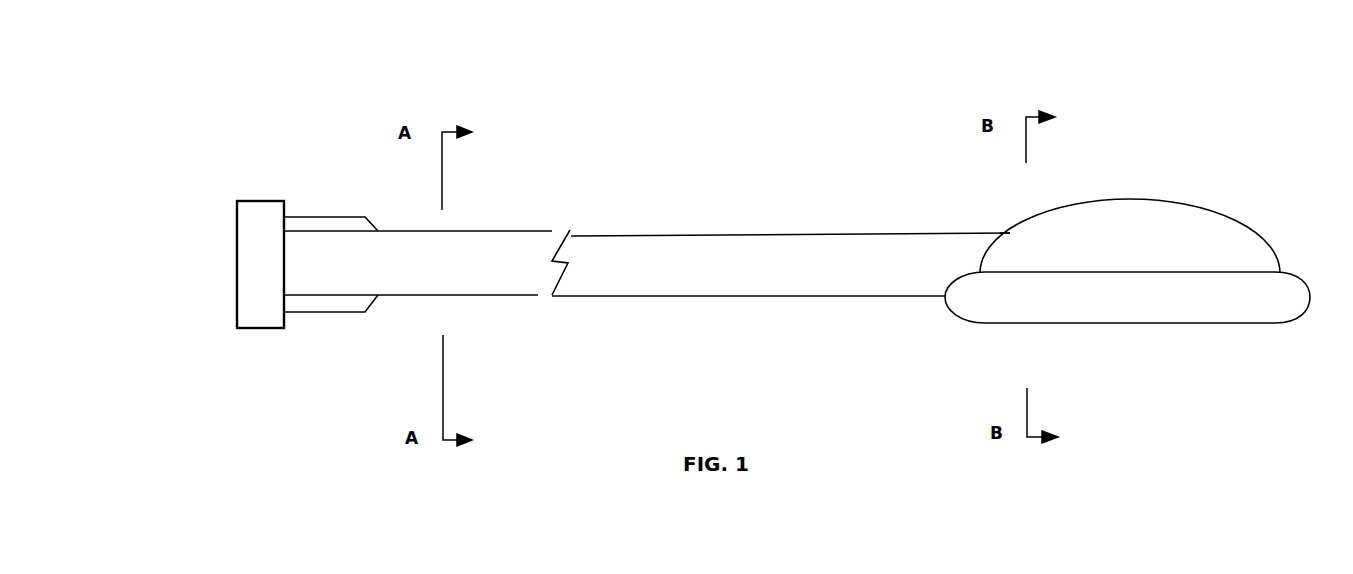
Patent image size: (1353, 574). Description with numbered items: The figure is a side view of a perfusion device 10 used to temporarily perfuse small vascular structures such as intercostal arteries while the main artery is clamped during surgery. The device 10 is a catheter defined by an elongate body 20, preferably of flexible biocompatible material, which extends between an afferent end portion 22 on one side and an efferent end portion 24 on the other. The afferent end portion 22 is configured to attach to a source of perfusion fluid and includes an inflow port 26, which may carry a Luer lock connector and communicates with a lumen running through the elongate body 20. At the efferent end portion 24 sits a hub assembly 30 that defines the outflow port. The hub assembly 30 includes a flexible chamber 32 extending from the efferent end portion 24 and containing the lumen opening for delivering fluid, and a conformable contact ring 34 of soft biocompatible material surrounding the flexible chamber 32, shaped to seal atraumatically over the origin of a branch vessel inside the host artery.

The perfusion device 10 is at (549, 157).
The elongate body 20 is at (748, 254).
The afferent end portion 22 is at (332, 228).
The efferent end portion 24 is at (962, 243).
The inflow port 26 is at (253, 269).
The hub assembly 30 is at (1220, 179).
The flexible chamber 32 is at (1242, 240).
The conformable contact ring 34 is at (1223, 320).